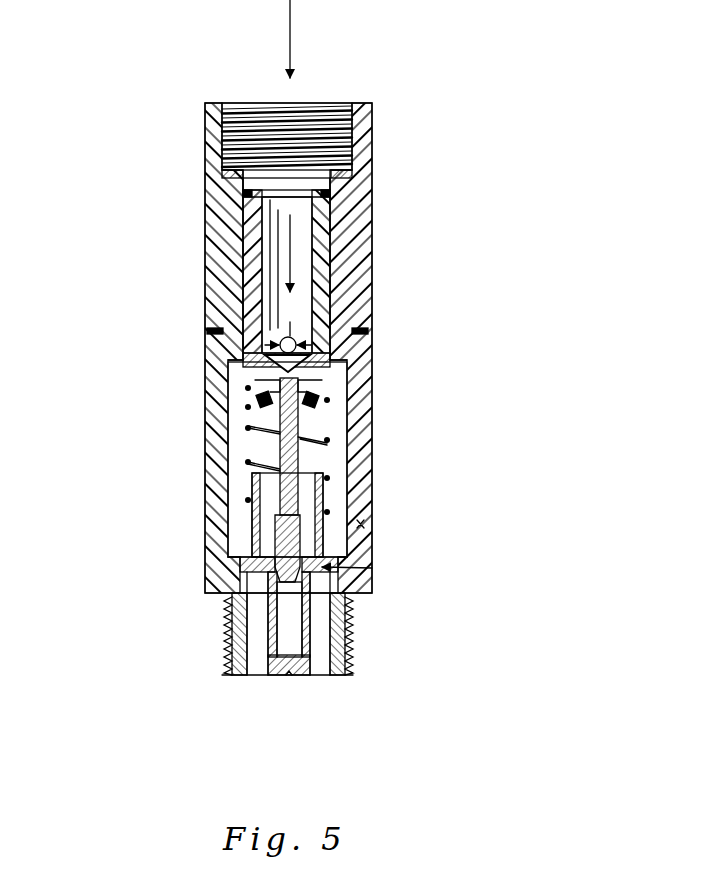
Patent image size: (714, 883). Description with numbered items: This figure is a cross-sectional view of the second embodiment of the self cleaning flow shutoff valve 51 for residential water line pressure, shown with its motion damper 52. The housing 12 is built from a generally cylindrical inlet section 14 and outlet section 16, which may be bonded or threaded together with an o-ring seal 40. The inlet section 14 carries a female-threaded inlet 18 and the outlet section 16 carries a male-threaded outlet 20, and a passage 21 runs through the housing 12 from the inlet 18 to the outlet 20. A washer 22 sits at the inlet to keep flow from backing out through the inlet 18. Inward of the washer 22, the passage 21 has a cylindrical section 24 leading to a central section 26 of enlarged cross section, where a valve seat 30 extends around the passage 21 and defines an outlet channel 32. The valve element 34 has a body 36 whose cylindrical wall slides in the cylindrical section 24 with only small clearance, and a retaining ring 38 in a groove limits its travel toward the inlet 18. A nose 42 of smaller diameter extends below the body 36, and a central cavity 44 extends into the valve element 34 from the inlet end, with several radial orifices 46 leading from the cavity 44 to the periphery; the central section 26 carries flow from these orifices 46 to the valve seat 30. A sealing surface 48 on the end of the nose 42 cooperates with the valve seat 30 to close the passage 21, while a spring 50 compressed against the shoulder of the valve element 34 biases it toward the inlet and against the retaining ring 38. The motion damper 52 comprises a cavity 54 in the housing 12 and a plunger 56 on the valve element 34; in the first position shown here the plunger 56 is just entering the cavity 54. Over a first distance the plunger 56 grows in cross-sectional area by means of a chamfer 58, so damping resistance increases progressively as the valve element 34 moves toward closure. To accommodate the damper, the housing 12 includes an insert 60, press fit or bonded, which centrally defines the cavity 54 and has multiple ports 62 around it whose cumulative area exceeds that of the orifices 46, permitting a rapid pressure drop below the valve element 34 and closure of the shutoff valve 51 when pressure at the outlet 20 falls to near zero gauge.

The housing 12 is at (372, 103).
The inlet section 14 is at (360, 215).
The outlet section 16 is at (360, 520).
The inlet 18 is at (331, 103).
The outlet 20 is at (263, 676).
The passage 21 is at (305, 182).
The washer 22 is at (222, 174).
The cylindrical section 24 is at (245, 185).
The central section 26 is at (347, 450).
The valve seat 30 is at (322, 455).
The outlet channel 32 is at (325, 678).
The valve element 34 is at (330, 190).
The body 36 is at (327, 260).
The retaining ring 38 is at (243, 193).
The o-ring seal 40 is at (209, 328).
The nose 42 is at (262, 402).
The central cavity 44 is at (303, 293).
The orifices 46 is at (275, 328).
The sealing surface 48 is at (250, 445).
The spring 50 is at (315, 400).
The flow shutoff valve 51 is at (207, 95).
The motion damper 52 is at (372, 568).
The cavity 54 is at (280, 615).
The plunger 56 is at (273, 560).
The chamfer 58 is at (342, 606).
The insert 60 is at (291, 676).
The ports 62 is at (255, 676).